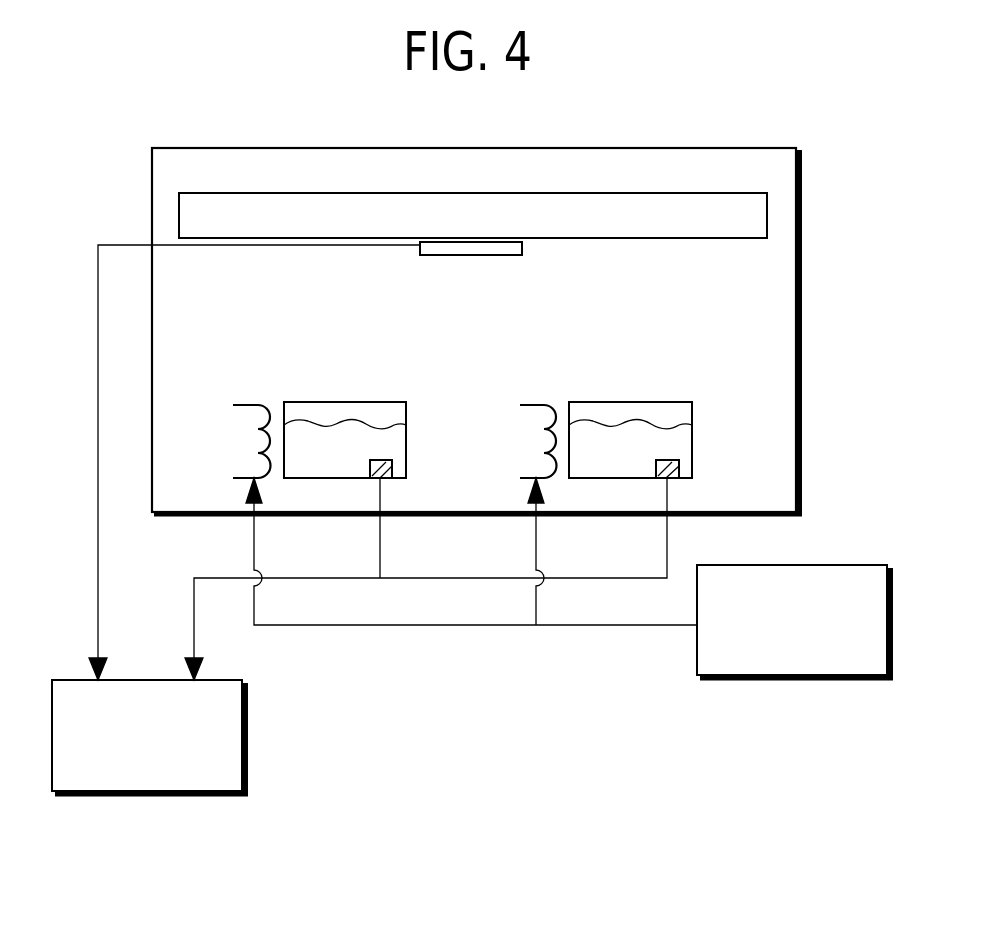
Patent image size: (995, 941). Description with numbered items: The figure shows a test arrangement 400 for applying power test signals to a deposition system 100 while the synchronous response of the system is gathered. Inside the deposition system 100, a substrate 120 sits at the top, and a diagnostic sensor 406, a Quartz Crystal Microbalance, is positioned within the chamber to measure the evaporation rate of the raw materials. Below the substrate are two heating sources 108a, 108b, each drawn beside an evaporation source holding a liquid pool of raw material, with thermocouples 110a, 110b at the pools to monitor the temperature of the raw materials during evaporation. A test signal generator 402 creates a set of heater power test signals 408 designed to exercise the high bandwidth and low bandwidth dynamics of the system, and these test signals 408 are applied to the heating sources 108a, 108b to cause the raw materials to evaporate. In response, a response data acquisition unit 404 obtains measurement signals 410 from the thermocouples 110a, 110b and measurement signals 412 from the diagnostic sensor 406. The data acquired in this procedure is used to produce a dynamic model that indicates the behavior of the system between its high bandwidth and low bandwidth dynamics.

The deposition system 100 is at (802, 328).
The test system 400 is at (689, 130).
The substrate 120 is at (490, 229).
The diagnostic sensors 406 is at (473, 258).
The heating source 108a is at (245, 402).
The heating source 108b is at (531, 402).
The thermocouple 110a is at (392, 468).
The thermocouple 110b is at (679, 468).
The heater power test signals 408 is at (478, 627).
The measurement signals 410 is at (196, 645).
The measurement signals 412 is at (100, 553).
The test signal generator 402 is at (814, 661).
The response data acquisition unit 404 is at (165, 774).